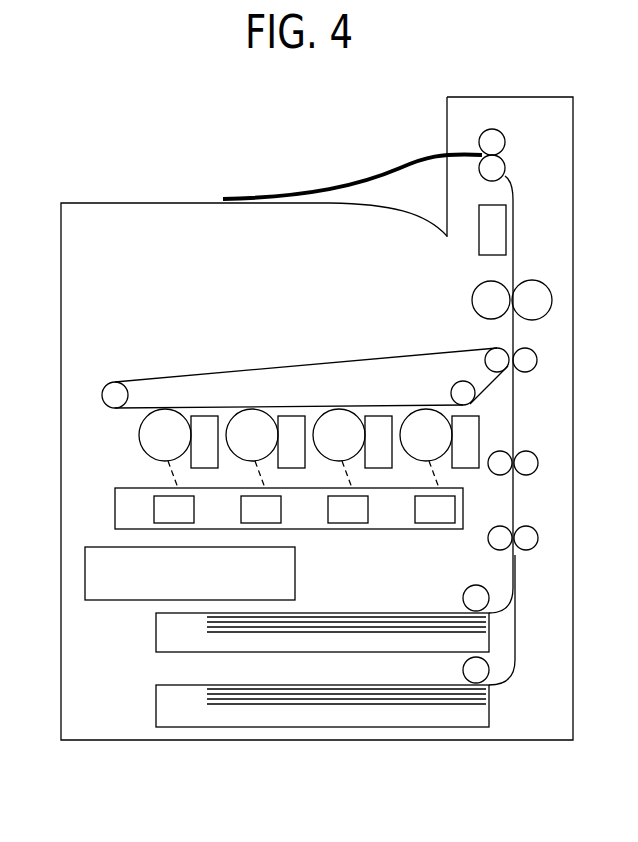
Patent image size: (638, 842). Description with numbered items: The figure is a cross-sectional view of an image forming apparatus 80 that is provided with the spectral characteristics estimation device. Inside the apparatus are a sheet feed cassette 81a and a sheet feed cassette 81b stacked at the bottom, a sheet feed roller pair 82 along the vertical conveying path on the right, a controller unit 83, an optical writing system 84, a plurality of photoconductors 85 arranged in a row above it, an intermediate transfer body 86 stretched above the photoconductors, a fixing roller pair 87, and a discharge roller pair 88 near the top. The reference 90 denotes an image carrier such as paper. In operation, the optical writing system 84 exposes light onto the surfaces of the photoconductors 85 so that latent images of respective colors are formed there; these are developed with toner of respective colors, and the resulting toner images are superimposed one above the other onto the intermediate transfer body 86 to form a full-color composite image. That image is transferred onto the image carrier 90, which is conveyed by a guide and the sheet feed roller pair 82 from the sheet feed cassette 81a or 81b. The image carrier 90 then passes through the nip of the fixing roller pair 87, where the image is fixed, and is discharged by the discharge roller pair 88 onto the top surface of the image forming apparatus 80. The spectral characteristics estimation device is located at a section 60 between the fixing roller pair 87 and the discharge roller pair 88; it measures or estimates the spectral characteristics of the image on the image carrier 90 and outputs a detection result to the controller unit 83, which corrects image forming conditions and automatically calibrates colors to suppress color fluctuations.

The image forming apparatus 80 is at (155, 115).
The image carrier 90 is at (388, 172).
The discharge roller pair 88 is at (506, 140).
The section 60 is at (479, 243).
The fixing roller pair 87 is at (536, 283).
The intermediate transfer body 86 is at (146, 372).
The photoconductors 85 is at (140, 432).
The optical writing system 84 is at (115, 508).
The controller unit 83 is at (85, 578).
The sheet feed cassette 81a is at (156, 637).
The sheet feed cassette 81b is at (156, 708).
The sheet feed roller pair 82 is at (537, 528).